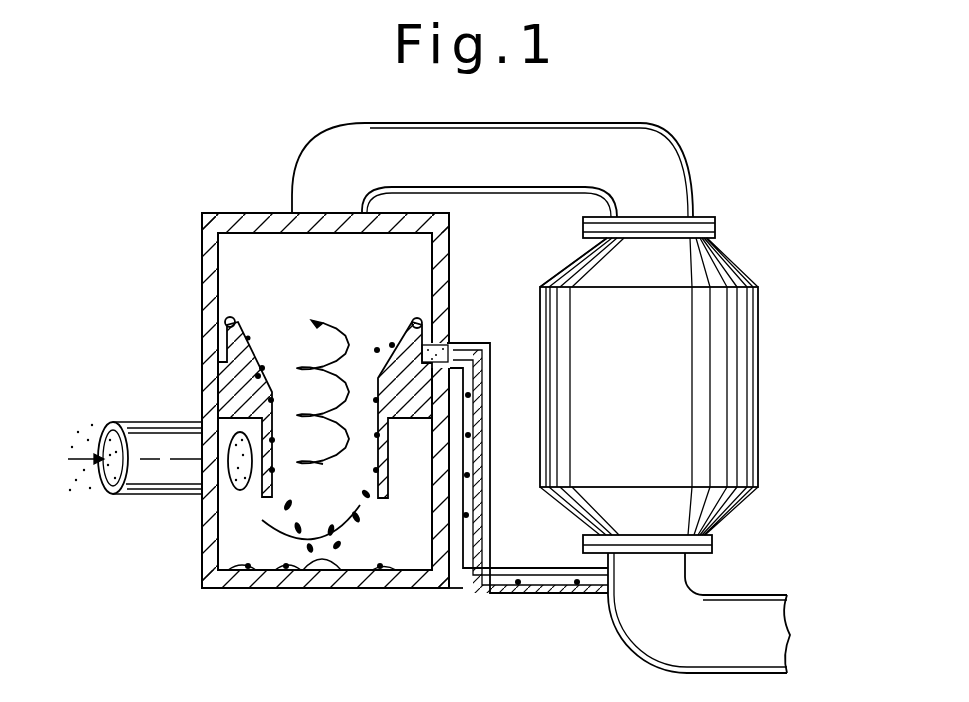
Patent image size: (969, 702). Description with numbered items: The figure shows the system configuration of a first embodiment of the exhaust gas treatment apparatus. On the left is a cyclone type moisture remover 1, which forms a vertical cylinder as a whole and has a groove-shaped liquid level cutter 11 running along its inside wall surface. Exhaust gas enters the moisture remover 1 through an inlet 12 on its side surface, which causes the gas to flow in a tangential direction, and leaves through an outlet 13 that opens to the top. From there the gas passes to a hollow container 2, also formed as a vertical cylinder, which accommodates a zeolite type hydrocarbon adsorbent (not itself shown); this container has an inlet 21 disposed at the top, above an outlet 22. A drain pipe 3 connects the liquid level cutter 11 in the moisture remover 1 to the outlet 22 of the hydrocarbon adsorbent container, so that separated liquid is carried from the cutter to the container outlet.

The cyclone type moisture remover 1 is at (200, 246).
The liquid level cutter 11 is at (455, 345).
The inlet 12 is at (184, 487).
The outlet 13 is at (305, 188).
The hollow container 2 is at (760, 300).
The inlet 21 is at (575, 272).
The outlet 22 is at (690, 585).
The drain pipe 3 is at (462, 600).